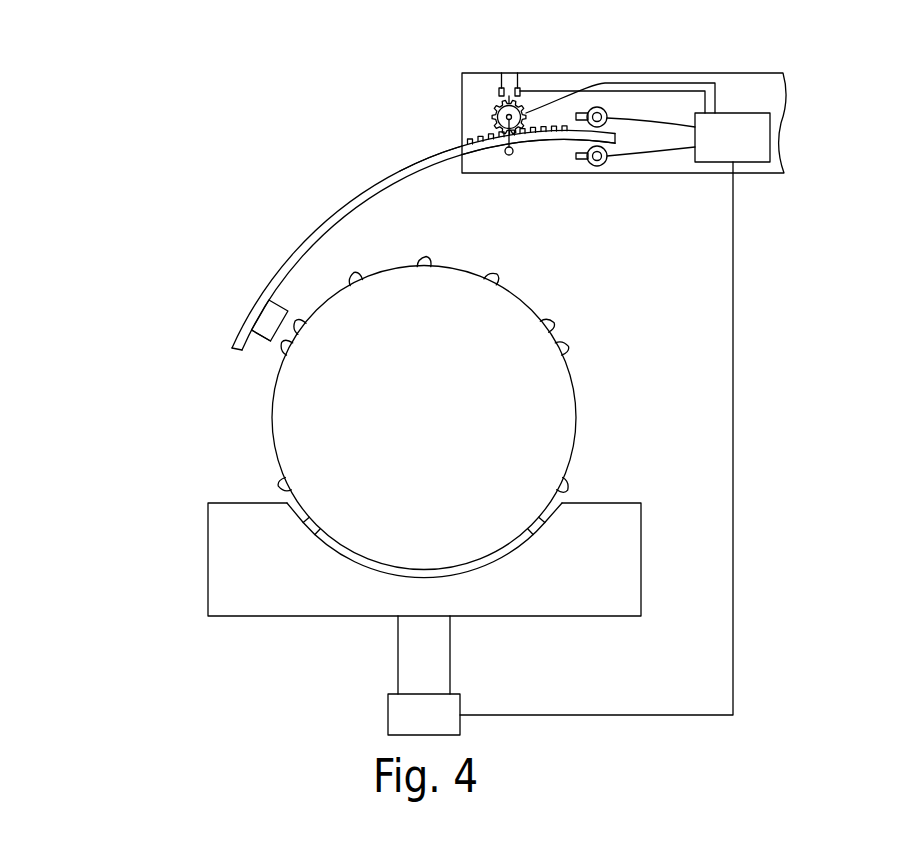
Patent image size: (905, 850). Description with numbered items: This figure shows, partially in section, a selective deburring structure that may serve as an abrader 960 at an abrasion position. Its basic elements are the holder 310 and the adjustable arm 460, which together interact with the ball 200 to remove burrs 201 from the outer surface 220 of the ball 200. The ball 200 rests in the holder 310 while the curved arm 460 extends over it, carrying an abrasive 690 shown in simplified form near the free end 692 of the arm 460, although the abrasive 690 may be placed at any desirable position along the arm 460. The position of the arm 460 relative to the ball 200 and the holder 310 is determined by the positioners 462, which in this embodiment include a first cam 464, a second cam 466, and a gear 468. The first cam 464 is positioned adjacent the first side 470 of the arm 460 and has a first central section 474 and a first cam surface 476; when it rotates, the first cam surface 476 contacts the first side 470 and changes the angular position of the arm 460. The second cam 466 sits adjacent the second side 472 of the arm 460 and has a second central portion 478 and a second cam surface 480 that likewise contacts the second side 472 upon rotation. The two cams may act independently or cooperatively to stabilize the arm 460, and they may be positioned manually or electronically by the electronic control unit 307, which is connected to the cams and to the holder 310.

The abrader 960 is at (150, 262).
The arm 460 is at (357, 196).
The second side 472 is at (448, 152).
The free end 692 is at (238, 331).
The abrasive 690 is at (259, 362).
The positioners 462 is at (526, 58).
The gear 468 is at (497, 109).
The first side 470 is at (535, 146).
The second cam surface 480 is at (585, 110).
The second cam 466 is at (598, 107).
The second central portion 478 is at (603, 110).
The first cam surface 476 is at (584, 161).
The first cam 464 is at (599, 166).
The first central section 474 is at (606, 163).
The electronic control unit 307 is at (740, 111).
The ball 200 is at (472, 376).
The outer surface 220 is at (576, 414).
The burrs 201 is at (343, 260).
The holder 310 is at (659, 550).